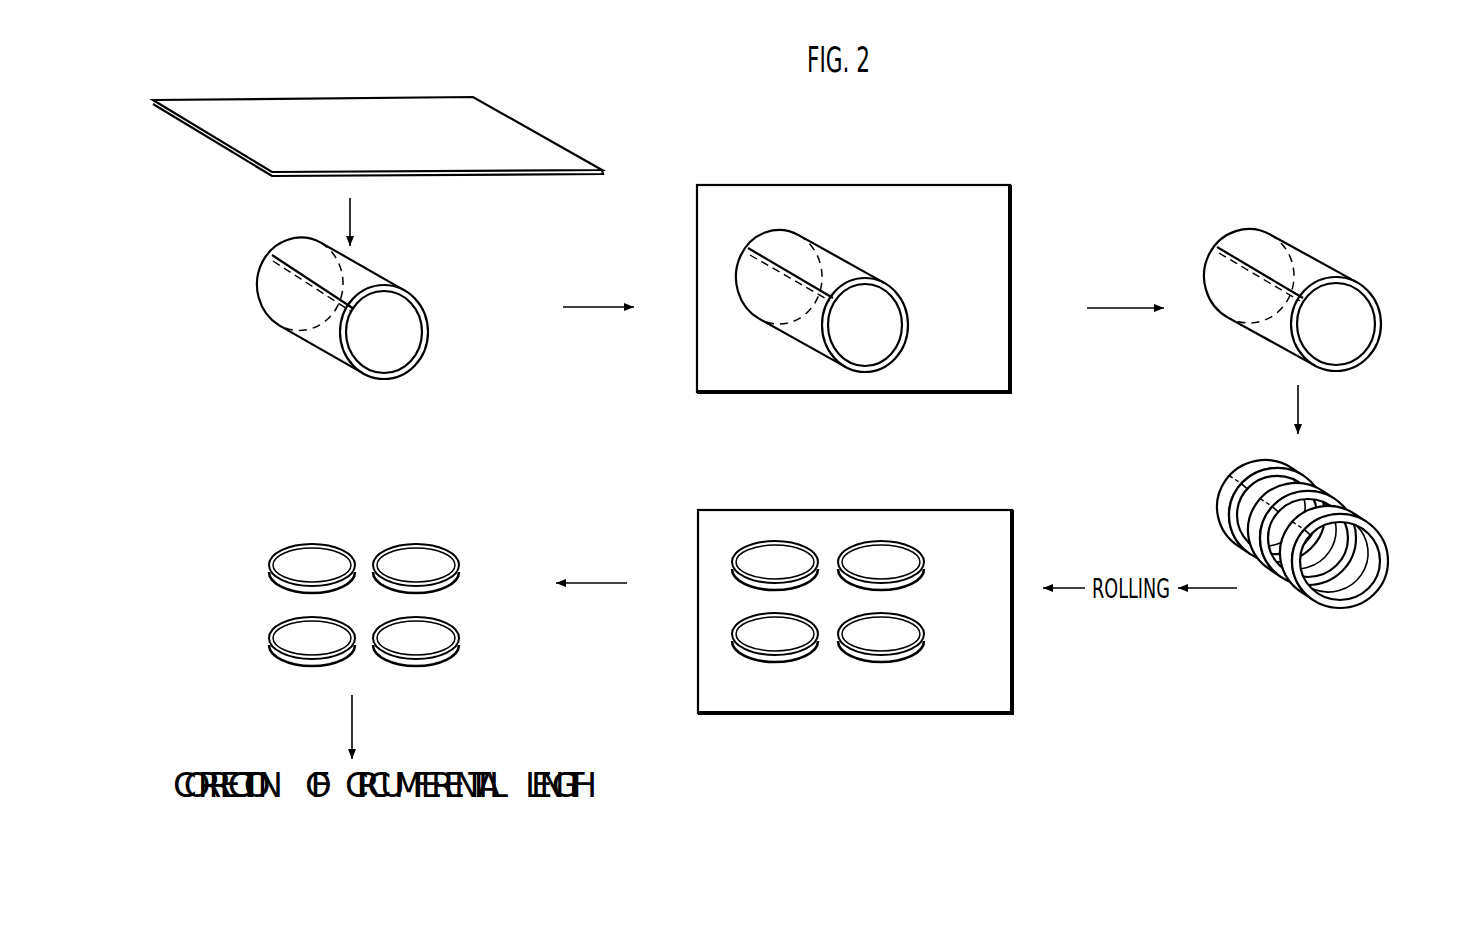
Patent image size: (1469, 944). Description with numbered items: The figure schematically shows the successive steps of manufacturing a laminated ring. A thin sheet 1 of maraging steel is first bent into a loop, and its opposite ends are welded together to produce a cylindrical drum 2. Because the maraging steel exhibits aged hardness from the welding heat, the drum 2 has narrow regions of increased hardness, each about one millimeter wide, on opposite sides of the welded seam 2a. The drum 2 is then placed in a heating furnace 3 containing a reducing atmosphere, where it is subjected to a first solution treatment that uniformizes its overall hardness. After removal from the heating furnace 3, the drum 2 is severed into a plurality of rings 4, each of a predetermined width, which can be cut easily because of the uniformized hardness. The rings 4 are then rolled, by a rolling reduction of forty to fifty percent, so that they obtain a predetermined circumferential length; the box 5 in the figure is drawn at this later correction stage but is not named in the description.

The thin sheet 1 is at (517, 120).
The cylindrical drum 2 is at (421, 283).
The welded seam 2a is at (308, 278).
The heating furnace 3 is at (1010, 217).
The rings 4 is at (1285, 472).
The sizing / correction step (box) 5 is at (1012, 687).